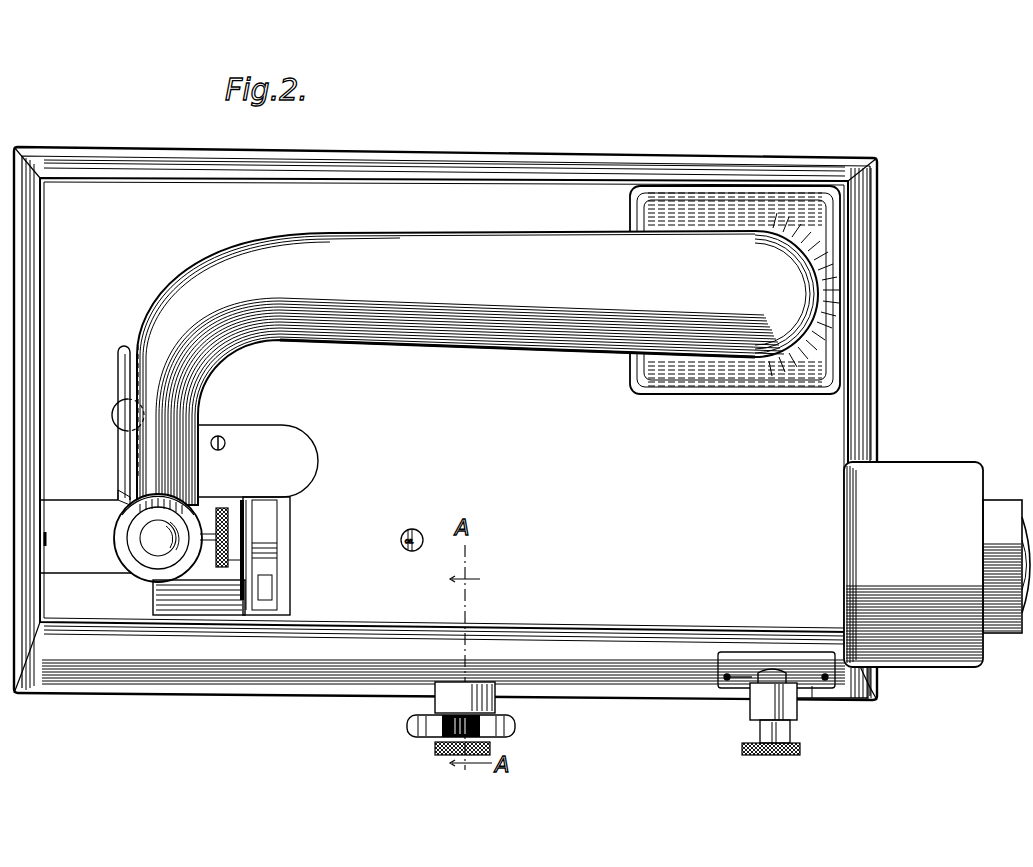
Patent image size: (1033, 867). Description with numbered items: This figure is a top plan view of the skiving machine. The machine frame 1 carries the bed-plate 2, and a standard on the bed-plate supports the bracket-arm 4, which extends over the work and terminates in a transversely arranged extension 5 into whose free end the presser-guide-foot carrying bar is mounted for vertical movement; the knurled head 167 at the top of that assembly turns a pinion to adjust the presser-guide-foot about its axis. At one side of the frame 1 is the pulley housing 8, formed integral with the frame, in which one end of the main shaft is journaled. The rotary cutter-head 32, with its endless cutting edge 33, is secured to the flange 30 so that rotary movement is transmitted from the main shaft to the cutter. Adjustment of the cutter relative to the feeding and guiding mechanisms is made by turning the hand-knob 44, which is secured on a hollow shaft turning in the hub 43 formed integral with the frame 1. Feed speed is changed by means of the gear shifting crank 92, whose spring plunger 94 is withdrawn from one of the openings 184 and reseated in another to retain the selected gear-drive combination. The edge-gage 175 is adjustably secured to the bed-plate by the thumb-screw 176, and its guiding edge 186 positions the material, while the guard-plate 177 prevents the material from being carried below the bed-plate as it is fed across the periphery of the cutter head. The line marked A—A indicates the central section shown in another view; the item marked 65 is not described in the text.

The machine frame 1 is at (472, 172).
The bed-plate 2 is at (377, 195).
The bracket-arm 4 is at (413, 268).
The transversely arranged extension 5 is at (196, 470).
The pulley housing 8 is at (937, 564).
The flange 30 is at (258, 508).
The rotary cutter-head 32 is at (216, 508).
The endless cutting edge 33 is at (156, 602).
The hub 43 is at (497, 708).
The hand-knob 44 is at (406, 724).
The knurled nut 65 is at (492, 749).
The gear shifting crank 92 is at (767, 702).
The spring plunger 94 is at (777, 676).
The knurled head 167 is at (222, 562).
The edge-gage 175 is at (124, 363).
The thumb-screw 176 is at (118, 421).
The guard-plate 177 is at (318, 447).
The openings 184 is at (770, 668).
The guiding edge 186 is at (150, 512).